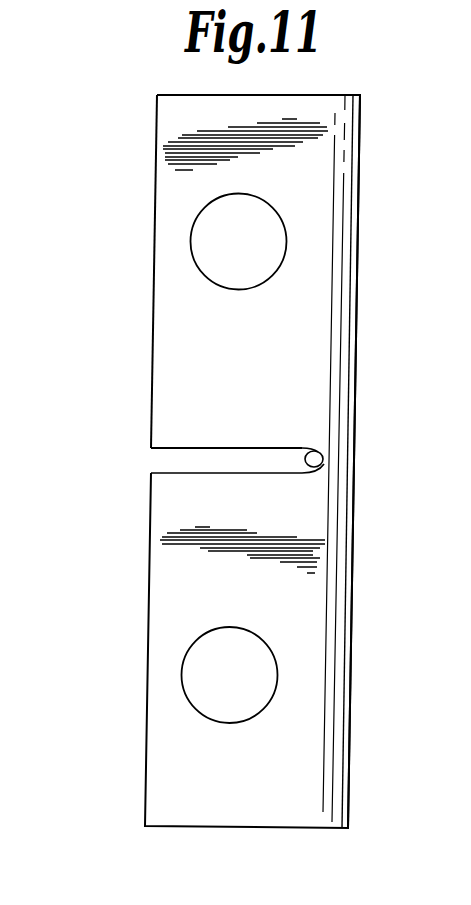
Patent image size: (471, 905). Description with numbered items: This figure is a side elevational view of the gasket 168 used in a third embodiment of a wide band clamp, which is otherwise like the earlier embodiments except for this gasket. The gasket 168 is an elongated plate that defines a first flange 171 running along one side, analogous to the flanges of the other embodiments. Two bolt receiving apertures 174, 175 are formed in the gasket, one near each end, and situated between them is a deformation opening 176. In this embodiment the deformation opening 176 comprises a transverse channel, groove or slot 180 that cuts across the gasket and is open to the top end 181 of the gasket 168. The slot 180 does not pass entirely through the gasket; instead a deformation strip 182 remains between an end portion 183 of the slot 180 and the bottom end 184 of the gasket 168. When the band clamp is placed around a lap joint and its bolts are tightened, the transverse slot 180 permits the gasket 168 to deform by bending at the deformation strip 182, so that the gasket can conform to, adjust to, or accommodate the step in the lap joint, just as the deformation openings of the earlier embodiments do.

The gasket 168 is at (136, 170).
The first flange 171 is at (333, 313).
The bolt receiving aperture 174 is at (200, 669).
The bolt receiving aperture 175 is at (205, 249).
The deformation opening 176 is at (178, 473).
The transverse slot 180 is at (175, 448).
The top end 181 is at (148, 567).
The deformation strip 182 is at (325, 465).
The end portion 183 is at (308, 450).
The bottom end 184 is at (352, 518).